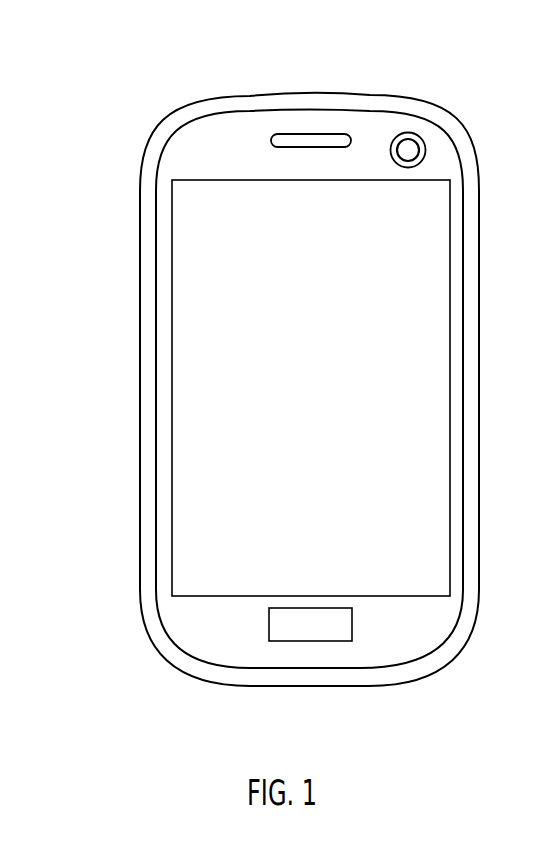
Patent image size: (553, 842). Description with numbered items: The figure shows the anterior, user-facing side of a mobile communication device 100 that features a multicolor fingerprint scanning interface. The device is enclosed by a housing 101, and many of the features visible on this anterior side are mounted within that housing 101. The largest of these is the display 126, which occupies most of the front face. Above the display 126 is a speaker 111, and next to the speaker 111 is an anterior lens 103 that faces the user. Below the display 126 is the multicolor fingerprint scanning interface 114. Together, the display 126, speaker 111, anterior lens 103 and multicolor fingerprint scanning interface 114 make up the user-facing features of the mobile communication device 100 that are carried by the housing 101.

The mobile communication device 100 is at (101, 76).
The housing 101 is at (139, 372).
The anterior lens 103 is at (425, 150).
The speaker 111 is at (300, 134).
The multicolor fingerprint scanning interface 114 is at (353, 622).
The display 126 is at (326, 318).